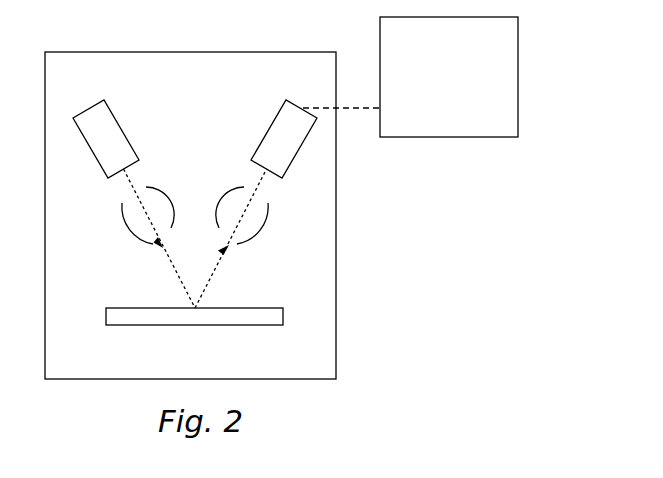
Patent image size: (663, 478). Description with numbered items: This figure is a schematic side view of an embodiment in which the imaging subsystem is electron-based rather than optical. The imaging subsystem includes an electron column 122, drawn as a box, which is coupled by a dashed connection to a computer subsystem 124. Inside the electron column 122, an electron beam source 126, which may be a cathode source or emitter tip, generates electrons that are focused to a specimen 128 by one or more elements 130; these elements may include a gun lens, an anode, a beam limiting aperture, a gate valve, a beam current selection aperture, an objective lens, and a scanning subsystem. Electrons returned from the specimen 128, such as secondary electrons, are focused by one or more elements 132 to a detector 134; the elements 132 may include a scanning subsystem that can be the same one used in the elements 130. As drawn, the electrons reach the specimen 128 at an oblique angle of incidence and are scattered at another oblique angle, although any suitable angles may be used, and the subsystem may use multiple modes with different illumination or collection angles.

The electron column 122 is at (190, 202).
The computer subsystem 124 is at (430, 115).
The electron beam source 126 is at (123, 132).
The specimen 128 is at (210, 301).
The one or more elements 130 is at (132, 238).
The one or more elements 132 is at (261, 238).
The detector 134 is at (265, 134).